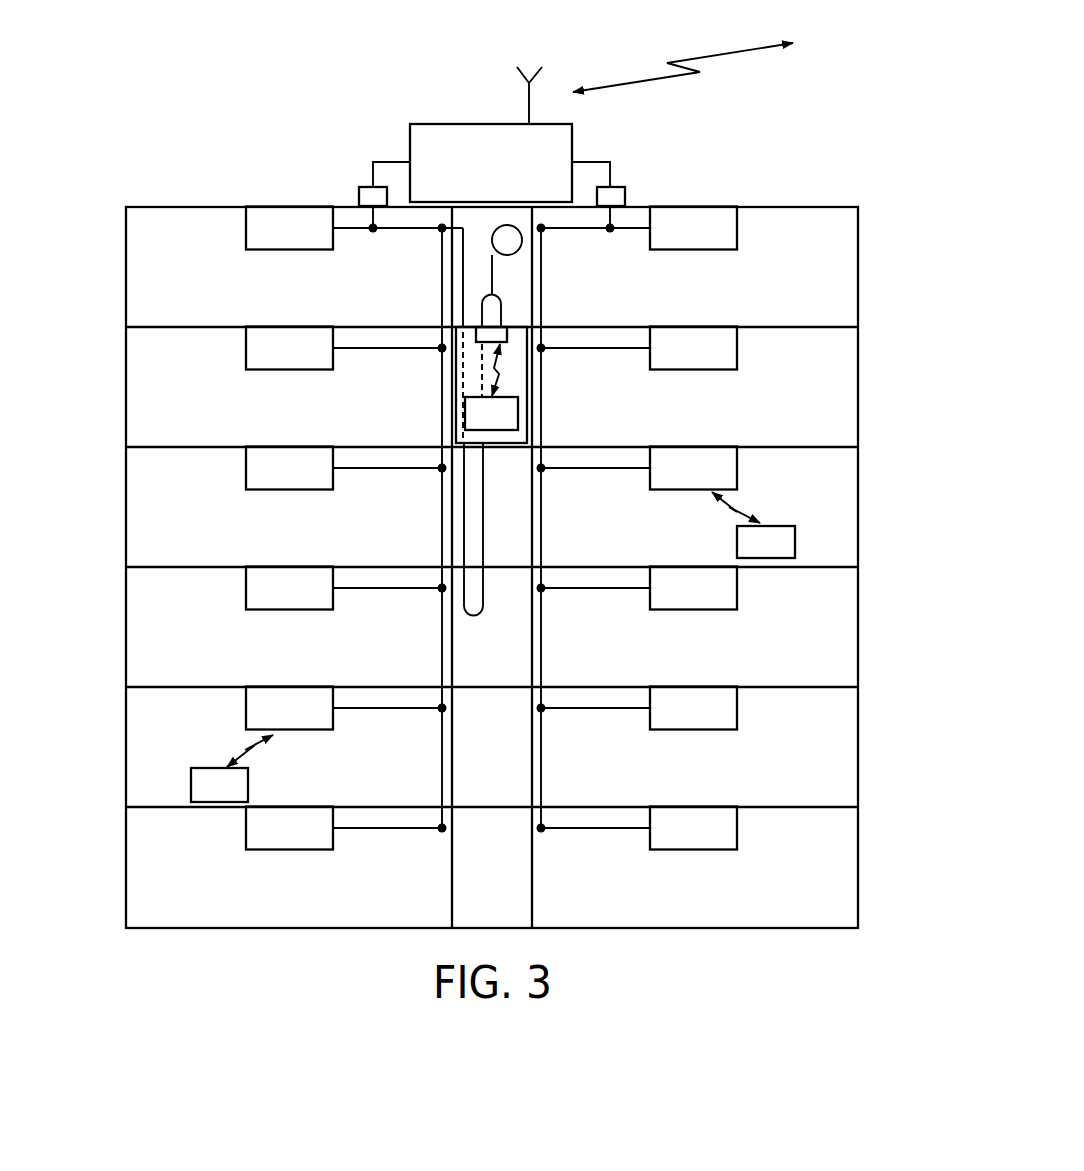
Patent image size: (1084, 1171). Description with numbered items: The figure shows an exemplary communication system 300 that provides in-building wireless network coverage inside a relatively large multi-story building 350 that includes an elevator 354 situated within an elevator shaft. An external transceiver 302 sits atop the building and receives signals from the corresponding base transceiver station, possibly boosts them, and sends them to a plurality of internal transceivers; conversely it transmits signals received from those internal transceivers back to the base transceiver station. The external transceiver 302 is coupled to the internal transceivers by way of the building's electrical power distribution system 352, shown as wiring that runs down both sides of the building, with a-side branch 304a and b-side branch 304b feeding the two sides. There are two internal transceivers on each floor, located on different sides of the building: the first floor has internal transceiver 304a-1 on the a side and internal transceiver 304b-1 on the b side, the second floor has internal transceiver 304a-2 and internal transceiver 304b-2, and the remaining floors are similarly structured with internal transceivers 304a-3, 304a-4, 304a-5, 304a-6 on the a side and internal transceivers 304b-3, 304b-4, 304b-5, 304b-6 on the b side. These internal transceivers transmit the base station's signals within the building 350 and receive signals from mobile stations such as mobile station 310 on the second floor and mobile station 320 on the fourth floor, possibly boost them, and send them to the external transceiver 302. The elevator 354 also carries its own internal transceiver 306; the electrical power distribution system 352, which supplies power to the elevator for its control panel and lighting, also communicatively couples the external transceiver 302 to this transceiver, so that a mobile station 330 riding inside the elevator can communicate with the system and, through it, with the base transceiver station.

The communication system 300 is at (812, 150).
The external transceiver 302 is at (450, 124).
The internal transceivers on the a side 304a is at (367, 187).
The internal transceivers on the b side 304b is at (615, 187).
The internal transceiver 304a-1 is at (246, 837).
The internal transceiver 304a-2 is at (246, 712).
The internal transceiver 304a-3 is at (246, 597).
The internal transceiver 304a-4 is at (246, 477).
The internal transceiver 304a-5 is at (246, 357).
The internal transceiver 304a-6 is at (246, 237).
The internal transceiver 304b-1 is at (737, 838).
The internal transceiver 304b-2 is at (737, 718).
The internal transceiver 304b-3 is at (737, 598).
The internal transceiver 304b-4 is at (737, 466).
The internal transceiver 304b-5 is at (737, 358).
The internal transceiver 304b-6 is at (737, 238).
The internal transceiver 306 is at (497, 333).
The mobile station 310 is at (191, 787).
The mobile station 320 is at (795, 545).
The mobile station 330 is at (518, 413).
The building 350 is at (862, 474).
The electrical power distribution system 352 is at (403, 232).
The elevator 354 is at (512, 443).